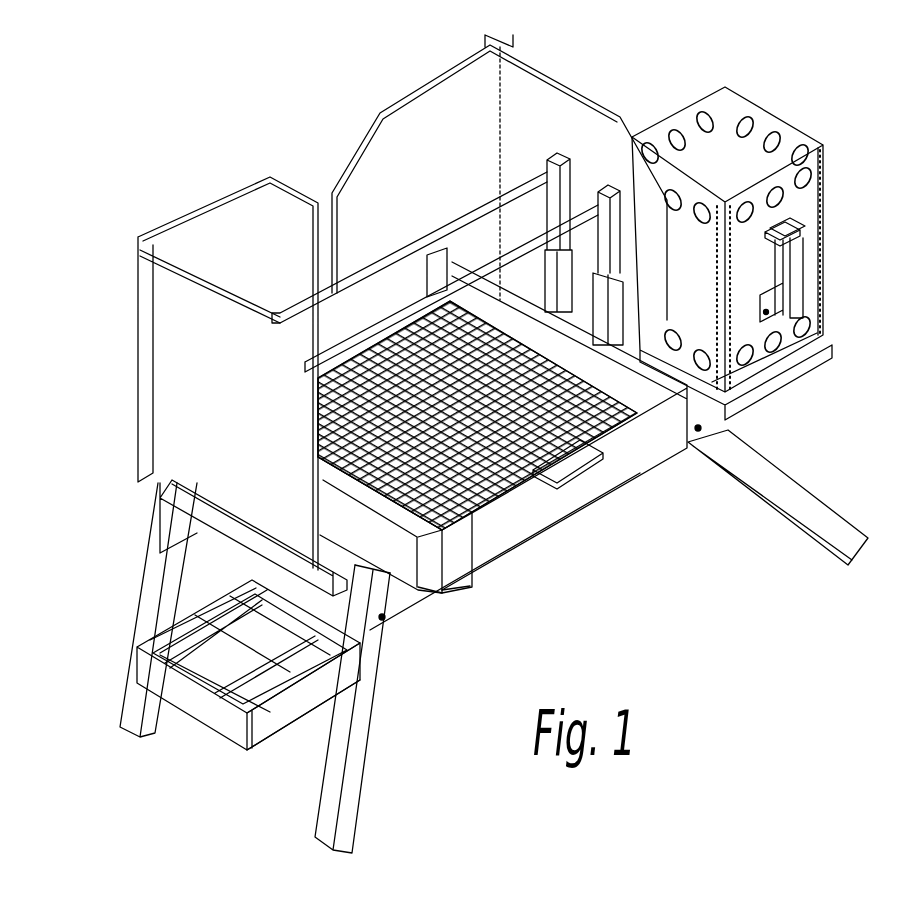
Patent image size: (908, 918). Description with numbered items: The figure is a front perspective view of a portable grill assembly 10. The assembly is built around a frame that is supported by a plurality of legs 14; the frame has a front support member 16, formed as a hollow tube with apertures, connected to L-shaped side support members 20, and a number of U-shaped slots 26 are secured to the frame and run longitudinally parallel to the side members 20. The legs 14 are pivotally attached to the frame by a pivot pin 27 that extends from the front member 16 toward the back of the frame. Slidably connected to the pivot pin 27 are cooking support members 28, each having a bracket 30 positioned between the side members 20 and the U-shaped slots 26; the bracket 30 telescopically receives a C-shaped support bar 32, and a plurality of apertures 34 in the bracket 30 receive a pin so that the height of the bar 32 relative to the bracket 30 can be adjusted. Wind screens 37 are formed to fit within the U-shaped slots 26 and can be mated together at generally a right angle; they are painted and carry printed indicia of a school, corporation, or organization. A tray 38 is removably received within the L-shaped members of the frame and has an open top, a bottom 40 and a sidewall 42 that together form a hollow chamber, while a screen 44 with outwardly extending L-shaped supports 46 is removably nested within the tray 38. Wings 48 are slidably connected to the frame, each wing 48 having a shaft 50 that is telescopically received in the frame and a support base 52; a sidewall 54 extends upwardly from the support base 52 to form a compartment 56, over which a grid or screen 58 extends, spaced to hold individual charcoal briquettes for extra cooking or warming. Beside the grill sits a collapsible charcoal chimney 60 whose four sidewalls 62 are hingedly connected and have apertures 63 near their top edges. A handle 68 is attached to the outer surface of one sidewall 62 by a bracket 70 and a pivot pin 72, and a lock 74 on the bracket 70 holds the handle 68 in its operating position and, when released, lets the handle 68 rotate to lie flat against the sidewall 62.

The grill assembly 10 is at (225, 130).
The legs 14 is at (838, 515).
The front support member 16 is at (438, 607).
The side support members 20 is at (380, 677).
The U-shaped slots 26 is at (213, 513).
The pivot pin 27 is at (703, 430).
The cooking support member 28 is at (615, 138).
The bracket 30 is at (617, 247).
The C-shaped support bar 32 is at (493, 267).
The apertures 34 is at (620, 273).
The wind screens 37 is at (212, 203).
The tray 38 is at (540, 575).
The bottom 40 is at (563, 560).
The sidewall 42 is at (488, 563).
The screen 44 is at (457, 587).
The L-shaped supports 46 is at (577, 478).
The wings 48 is at (205, 775).
The shaft 50 is at (345, 598).
The support base 52 is at (298, 725).
The sidewall 54 is at (265, 725).
The compartment 56 is at (185, 645).
The grid or screen 58 is at (222, 667).
The collapsible charcoal chimney 60 is at (757, 68).
The sidewalls 62 is at (810, 163).
The apertures 63 is at (705, 110).
The handle 68 is at (803, 282).
The bracket 70 is at (798, 232).
The pivot pin 72 is at (780, 268).
The lock 74 is at (782, 222).